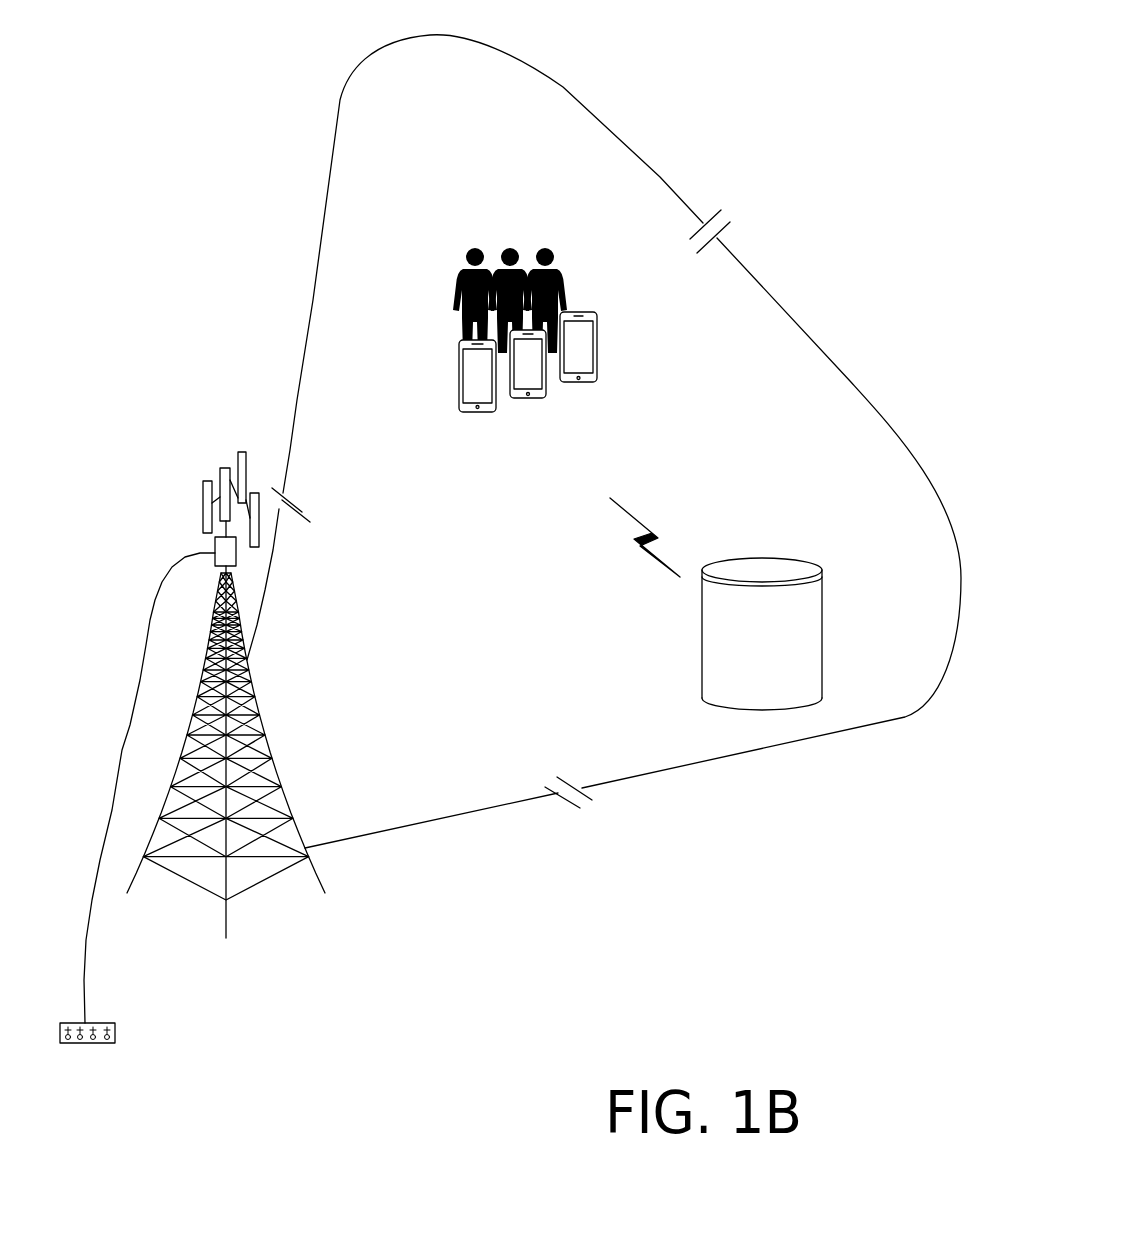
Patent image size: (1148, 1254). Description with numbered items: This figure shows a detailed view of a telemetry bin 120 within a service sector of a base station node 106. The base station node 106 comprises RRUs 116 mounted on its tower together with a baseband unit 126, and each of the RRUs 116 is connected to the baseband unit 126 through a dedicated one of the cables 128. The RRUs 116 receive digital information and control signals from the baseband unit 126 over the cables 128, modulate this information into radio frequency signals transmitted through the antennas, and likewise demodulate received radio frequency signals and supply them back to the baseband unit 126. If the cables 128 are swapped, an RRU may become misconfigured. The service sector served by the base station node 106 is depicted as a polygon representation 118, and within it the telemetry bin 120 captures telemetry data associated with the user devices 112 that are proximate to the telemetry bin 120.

The polygon representation 118 is at (650, 165).
The RRUs 116 is at (207, 480).
The cables 128 is at (146, 634).
The user devices 112 is at (545, 362).
The telemetry bin 120 is at (733, 684).
The base station node 106 is at (283, 986).
The baseband unit 126 is at (85, 1043).